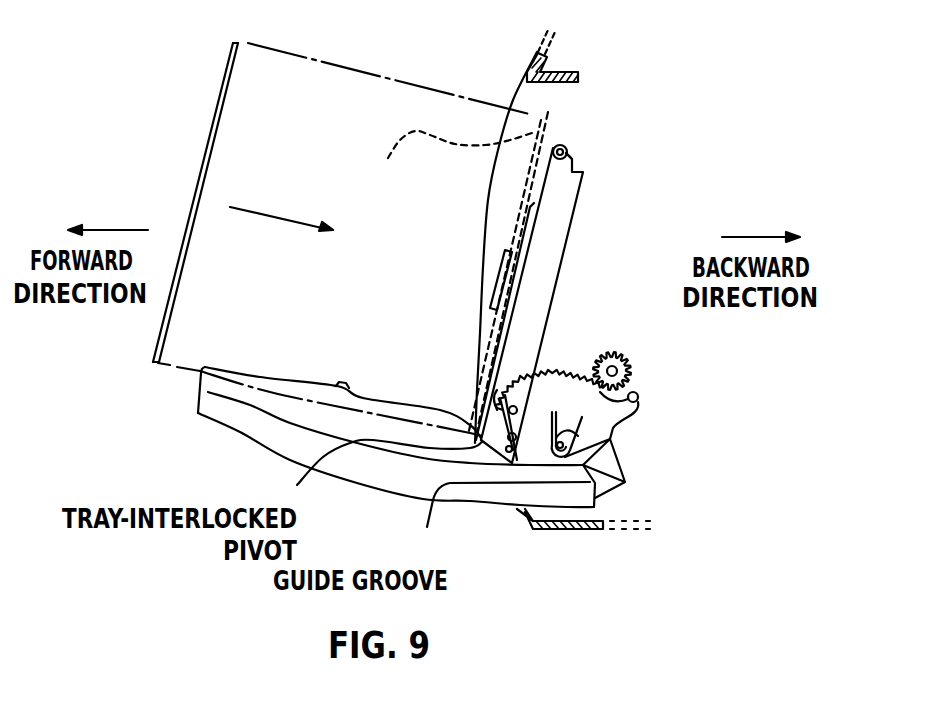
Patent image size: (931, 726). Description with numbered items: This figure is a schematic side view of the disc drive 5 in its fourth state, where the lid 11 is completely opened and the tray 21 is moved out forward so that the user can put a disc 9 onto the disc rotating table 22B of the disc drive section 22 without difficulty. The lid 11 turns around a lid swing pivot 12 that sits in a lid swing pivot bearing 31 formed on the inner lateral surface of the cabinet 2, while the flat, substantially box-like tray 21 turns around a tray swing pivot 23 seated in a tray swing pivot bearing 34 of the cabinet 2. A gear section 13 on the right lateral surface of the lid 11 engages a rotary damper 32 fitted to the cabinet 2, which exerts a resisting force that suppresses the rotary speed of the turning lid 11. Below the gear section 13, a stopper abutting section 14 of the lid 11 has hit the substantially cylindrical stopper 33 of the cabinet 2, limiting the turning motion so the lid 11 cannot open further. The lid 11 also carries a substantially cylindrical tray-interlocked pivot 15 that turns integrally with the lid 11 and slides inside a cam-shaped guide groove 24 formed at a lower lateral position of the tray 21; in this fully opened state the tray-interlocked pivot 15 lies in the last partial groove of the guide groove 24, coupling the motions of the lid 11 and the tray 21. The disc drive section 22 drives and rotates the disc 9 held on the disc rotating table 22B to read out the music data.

The cabinet 2 is at (530, 58).
The disc drive 5 is at (381, 68).
The disc 9 is at (227, 95).
The lid 11 is at (218, 414).
The lid swing pivot 12 is at (620, 468).
The gear section 13 is at (573, 354).
The stopper abutting section 14 is at (640, 395).
The tray-interlocked pivot 15 is at (377, 471).
The tray 21 is at (567, 208).
The disc drive section 22 is at (520, 217).
The disc rotating table 22B is at (503, 305).
The tray swing pivot 23 is at (562, 145).
The guide groove 24 is at (505, 524).
The lid swing pivot bearing 31 is at (583, 447).
The rotary damper 32 is at (620, 353).
The stopper 33 is at (636, 393).
The tray swing pivot bearing 34 is at (572, 152).